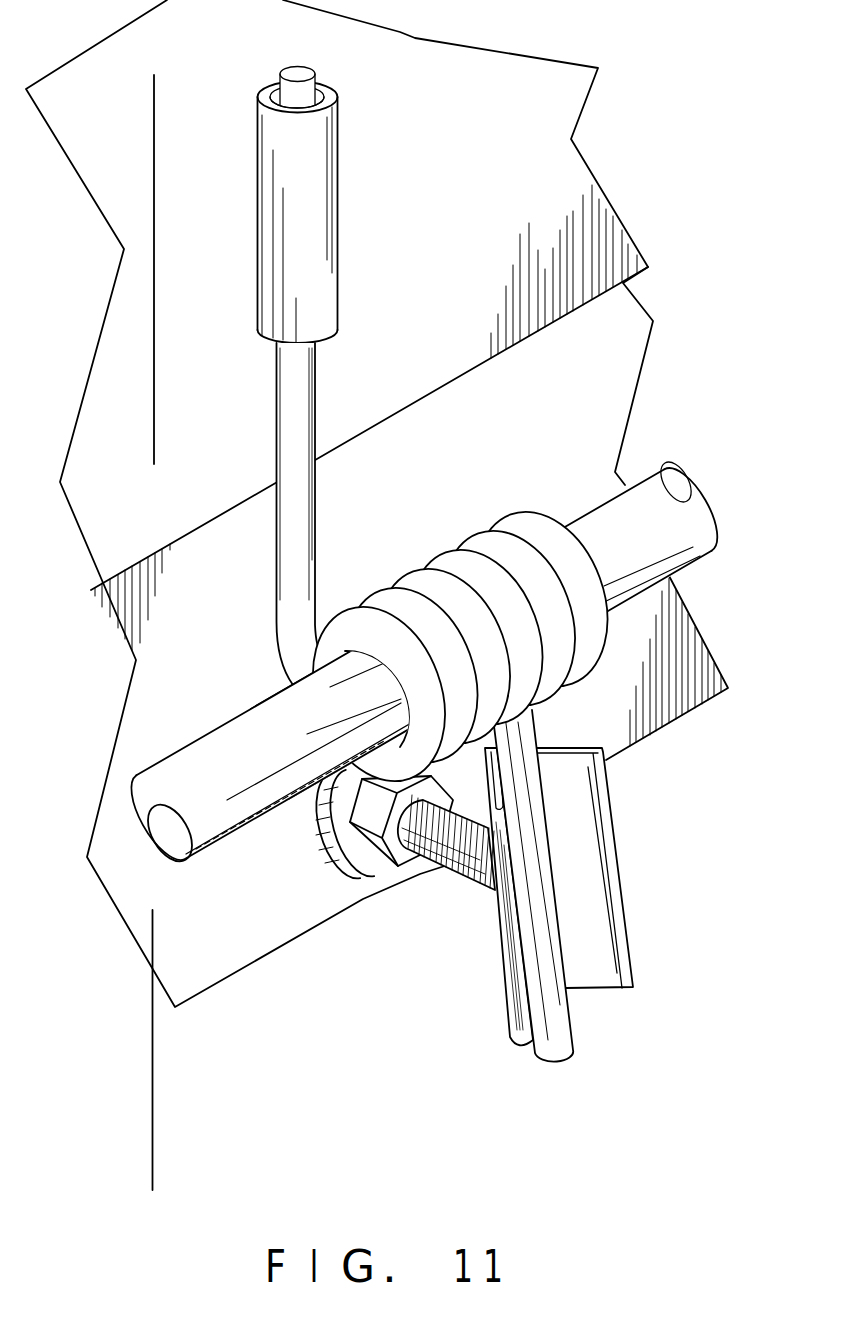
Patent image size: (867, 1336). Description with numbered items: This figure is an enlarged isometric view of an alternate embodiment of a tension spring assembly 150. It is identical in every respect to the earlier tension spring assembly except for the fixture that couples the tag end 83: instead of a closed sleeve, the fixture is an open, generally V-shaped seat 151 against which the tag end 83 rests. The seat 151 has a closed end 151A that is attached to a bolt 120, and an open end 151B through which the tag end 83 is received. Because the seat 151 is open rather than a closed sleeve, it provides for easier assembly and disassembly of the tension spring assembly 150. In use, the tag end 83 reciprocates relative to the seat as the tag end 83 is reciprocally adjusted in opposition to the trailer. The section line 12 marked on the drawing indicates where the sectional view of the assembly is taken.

The section line 12- 12 is at (220, 1126).
The tag end 83 is at (556, 1014).
The bolt 120 is at (465, 877).
The tension spring assembly 150 is at (463, 327).
The seat 151 is at (590, 860).
The closed end 151A is at (556, 683).
The open end 151B is at (585, 952).